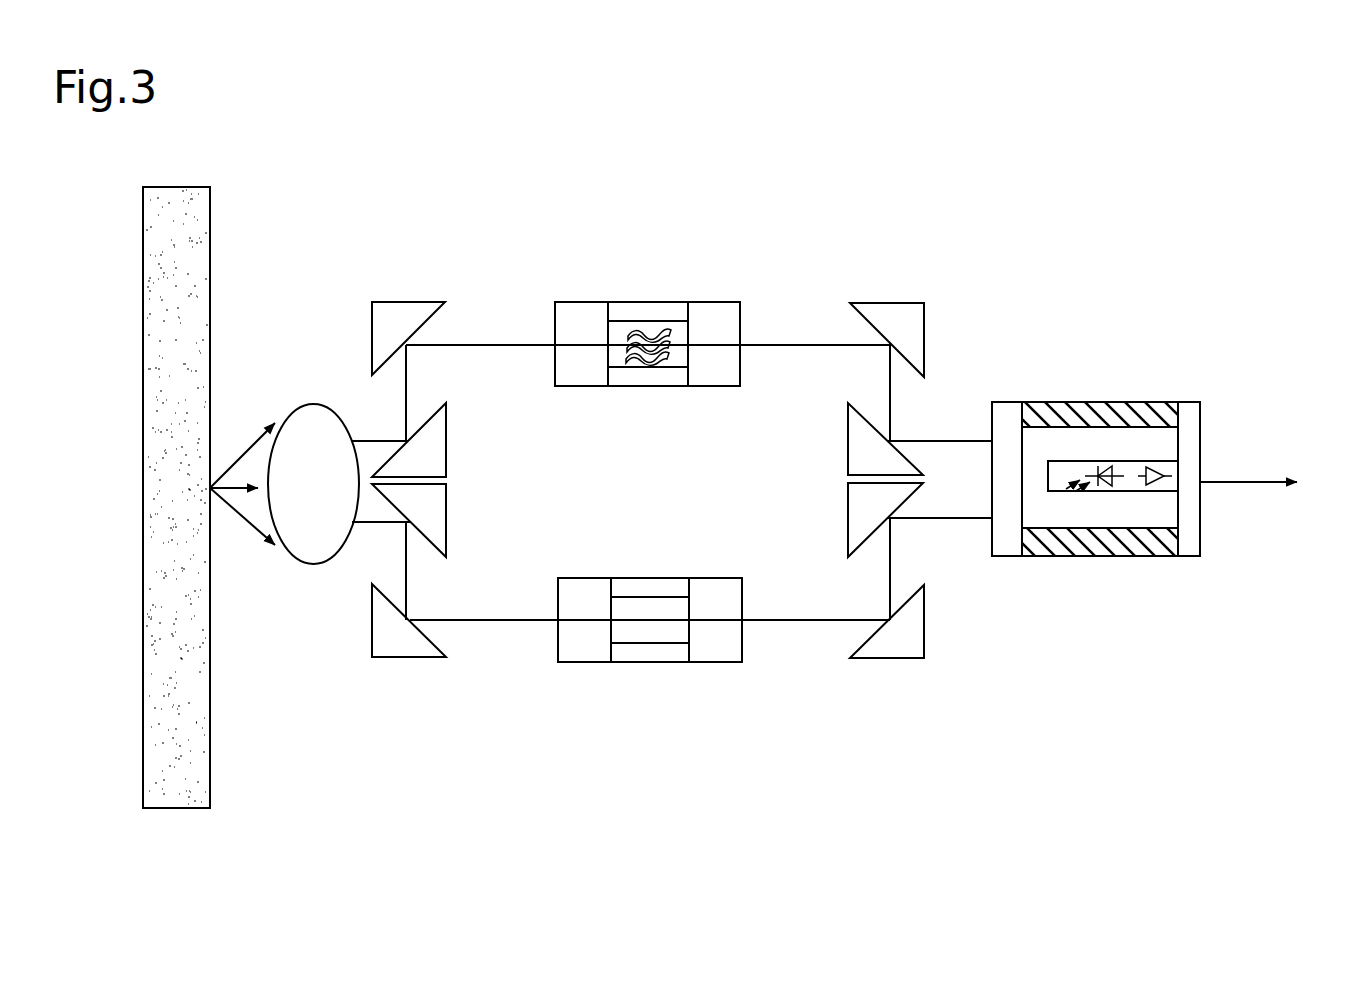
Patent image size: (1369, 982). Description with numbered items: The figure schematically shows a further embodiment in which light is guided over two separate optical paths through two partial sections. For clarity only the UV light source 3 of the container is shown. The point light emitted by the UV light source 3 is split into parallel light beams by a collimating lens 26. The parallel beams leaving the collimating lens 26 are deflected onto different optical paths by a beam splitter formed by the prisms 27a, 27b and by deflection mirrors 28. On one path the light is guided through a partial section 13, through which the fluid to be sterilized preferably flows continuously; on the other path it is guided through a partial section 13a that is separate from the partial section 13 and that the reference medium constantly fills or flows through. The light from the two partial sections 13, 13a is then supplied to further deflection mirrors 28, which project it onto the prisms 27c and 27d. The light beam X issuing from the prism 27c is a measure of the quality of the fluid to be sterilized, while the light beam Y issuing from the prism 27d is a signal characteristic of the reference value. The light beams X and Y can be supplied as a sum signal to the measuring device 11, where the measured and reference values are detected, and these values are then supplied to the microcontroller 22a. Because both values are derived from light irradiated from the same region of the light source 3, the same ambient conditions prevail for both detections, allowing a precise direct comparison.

The UV light source 3 is at (172, 362).
The collimating lens 26 is at (297, 388).
The deflection mirrors 28 is at (417, 297).
The partial section 13 is at (621, 328).
The partial section 13a is at (622, 636).
The beam splitter prism 27a is at (456, 448).
The beam splitter prism 27b is at (456, 512).
The prism 27c is at (838, 447).
The prism 27d is at (837, 515).
The measuring device 11 is at (1095, 577).
The microcontroller 22a is at (1284, 483).
The light beam X is at (945, 441).
The light beam Y is at (945, 518).